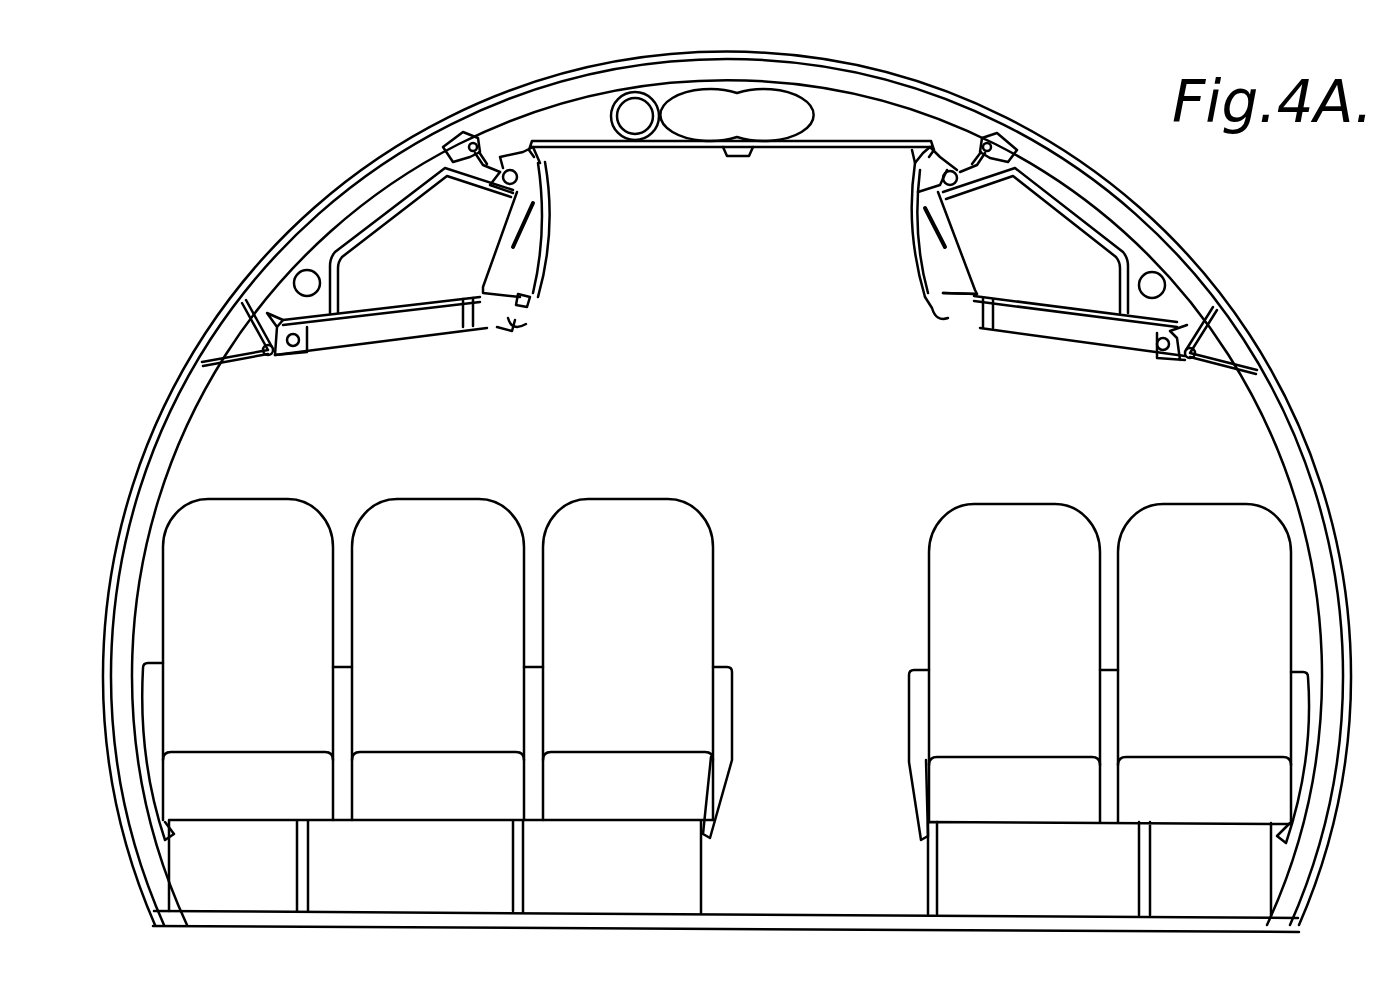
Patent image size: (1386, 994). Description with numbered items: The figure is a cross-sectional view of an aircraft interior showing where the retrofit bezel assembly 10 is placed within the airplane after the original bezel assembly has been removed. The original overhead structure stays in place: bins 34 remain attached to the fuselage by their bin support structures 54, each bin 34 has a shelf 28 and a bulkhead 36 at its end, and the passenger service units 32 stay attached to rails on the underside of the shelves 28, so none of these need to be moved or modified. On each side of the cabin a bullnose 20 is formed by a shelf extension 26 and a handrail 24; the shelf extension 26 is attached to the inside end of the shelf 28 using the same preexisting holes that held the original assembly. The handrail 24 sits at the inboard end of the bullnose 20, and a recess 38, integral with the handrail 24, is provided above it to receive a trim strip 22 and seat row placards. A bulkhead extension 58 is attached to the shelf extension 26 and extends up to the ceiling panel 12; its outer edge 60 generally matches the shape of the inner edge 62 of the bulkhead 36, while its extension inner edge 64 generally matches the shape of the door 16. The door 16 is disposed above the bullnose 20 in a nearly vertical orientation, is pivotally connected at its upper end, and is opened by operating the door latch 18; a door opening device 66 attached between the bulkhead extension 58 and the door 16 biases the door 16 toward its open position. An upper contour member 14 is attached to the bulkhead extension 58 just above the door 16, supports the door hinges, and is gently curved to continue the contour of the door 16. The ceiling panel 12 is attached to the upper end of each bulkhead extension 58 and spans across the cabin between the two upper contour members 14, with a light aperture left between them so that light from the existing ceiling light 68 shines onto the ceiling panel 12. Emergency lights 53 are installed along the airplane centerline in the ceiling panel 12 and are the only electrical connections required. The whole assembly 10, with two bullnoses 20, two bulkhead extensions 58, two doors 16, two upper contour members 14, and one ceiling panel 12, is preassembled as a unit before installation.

The retrofit bezel assembly 10 is at (777, 372).
The ceiling panel 12 is at (827, 149).
The upper contour member 14 is at (541, 180).
The door 16 is at (543, 267).
The door latch 18 is at (531, 302).
The bullnose 20 is at (490, 340).
The trim strip 22 is at (518, 322).
The handrail 24 is at (512, 330).
The shelf extension 26 is at (956, 315).
The shelf 28 is at (393, 320).
The passenger service unit 32 is at (353, 337).
The bin 34 is at (395, 192).
The bulkhead 36 is at (428, 255).
The recess 38 is at (930, 308).
The emergency light 53 is at (737, 157).
The bin support structure 54 is at (470, 140).
The bulkhead extension 58 is at (534, 230).
The outer edge 60 is at (487, 260).
The inner edge 62 is at (975, 278).
The extension inner edge 64 is at (917, 277).
The door opening device 66 is at (520, 220).
The existing ceiling light 68 is at (943, 150).